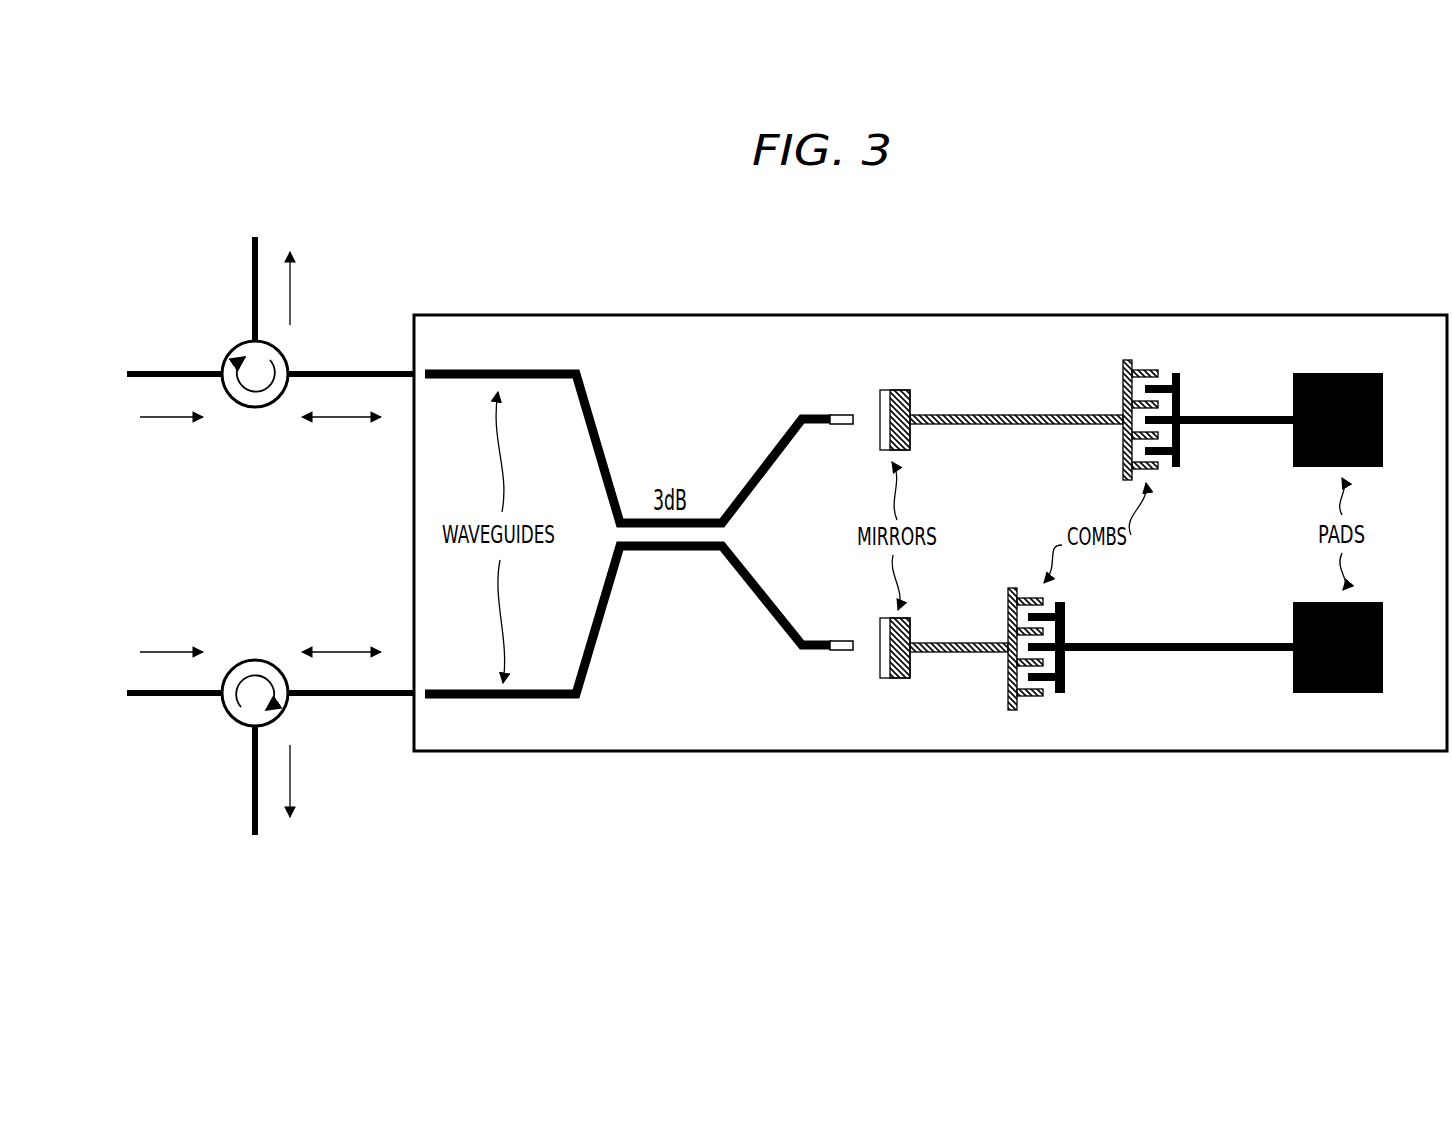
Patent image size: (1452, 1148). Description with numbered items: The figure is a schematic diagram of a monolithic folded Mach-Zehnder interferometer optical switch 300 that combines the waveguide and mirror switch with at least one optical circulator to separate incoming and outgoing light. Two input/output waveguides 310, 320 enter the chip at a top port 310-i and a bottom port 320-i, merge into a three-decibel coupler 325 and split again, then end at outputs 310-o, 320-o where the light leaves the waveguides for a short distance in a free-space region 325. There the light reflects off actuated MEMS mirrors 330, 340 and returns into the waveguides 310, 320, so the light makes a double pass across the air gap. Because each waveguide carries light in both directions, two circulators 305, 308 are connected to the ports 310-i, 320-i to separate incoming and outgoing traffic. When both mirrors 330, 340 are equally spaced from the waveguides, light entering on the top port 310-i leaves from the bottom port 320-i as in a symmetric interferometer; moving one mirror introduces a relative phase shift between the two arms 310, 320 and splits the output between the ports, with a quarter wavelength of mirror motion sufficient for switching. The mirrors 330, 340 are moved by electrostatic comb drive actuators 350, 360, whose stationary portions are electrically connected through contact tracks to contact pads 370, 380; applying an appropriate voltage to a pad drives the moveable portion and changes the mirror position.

The optical switch 300 is at (1296, 232).
The optical circulator 305 is at (233, 351).
The optical circulator 308 is at (233, 716).
The input/output waveguide 310 is at (594, 410).
The top port 310-i is at (412, 370).
The output 310-o is at (862, 410).
The input/output waveguide 320 is at (594, 655).
The bottom port 320-i is at (412, 700).
The output 320-o is at (866, 652).
The 3 dB coupler 325 is at (755, 295).
The MEMS mirror 330 is at (912, 406).
The MEMS mirror 340 is at (912, 658).
The comb drive actuator 350 is at (1122, 400).
The comb drive actuator 360 is at (1068, 676).
The contact pad 370 is at (1340, 372).
The contact pad 380 is at (1340, 694).